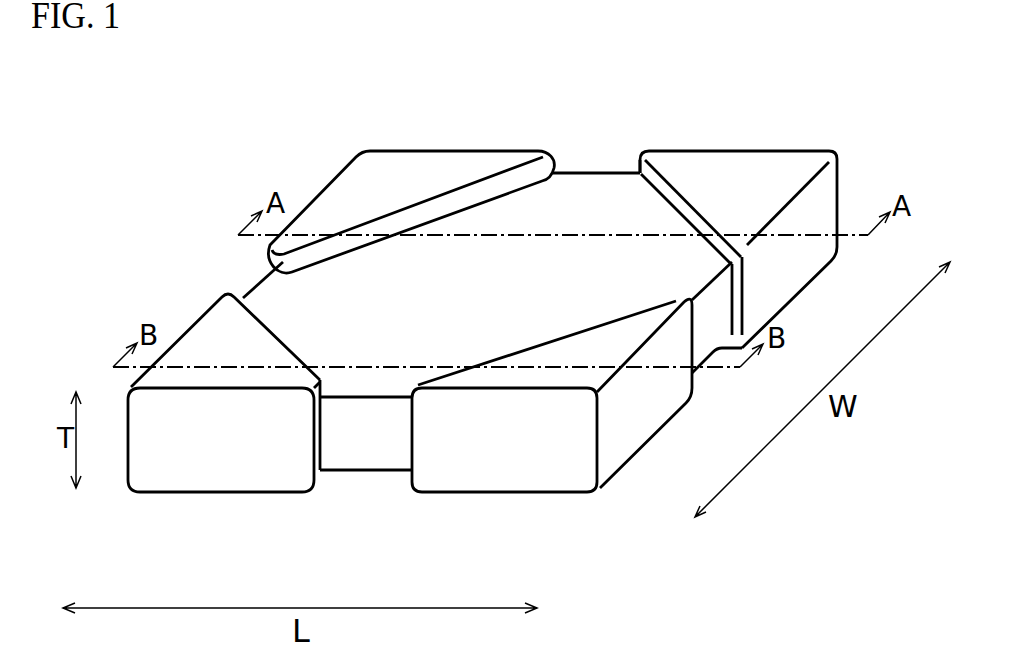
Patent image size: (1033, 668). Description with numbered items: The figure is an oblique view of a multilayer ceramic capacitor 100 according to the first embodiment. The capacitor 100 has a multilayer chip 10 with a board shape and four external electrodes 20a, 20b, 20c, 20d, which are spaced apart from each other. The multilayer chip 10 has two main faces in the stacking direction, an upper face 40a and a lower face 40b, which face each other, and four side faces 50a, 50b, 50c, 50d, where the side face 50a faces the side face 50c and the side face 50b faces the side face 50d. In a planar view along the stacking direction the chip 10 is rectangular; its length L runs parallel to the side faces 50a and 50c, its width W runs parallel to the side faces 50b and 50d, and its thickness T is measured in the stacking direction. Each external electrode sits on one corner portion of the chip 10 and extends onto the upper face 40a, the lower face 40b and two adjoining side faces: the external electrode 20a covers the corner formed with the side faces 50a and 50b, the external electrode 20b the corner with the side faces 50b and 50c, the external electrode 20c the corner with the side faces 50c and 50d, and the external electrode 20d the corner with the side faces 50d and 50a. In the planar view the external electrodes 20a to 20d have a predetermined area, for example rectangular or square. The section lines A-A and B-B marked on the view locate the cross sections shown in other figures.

The multilayer ceramic capacitor 100 is at (213, 115).
The multilayer chip 10 is at (598, 158).
The external electrode 20a is at (535, 509).
The external electrode 20b is at (713, 138).
The external electrode 20c is at (337, 173).
The external electrode 20d is at (255, 509).
The upper face 40a is at (527, 207).
The lower face 40b is at (397, 469).
The side face 50a is at (357, 445).
The side face 50b is at (717, 313).
The side face 50c is at (620, 172).
The side face 50d is at (248, 289).